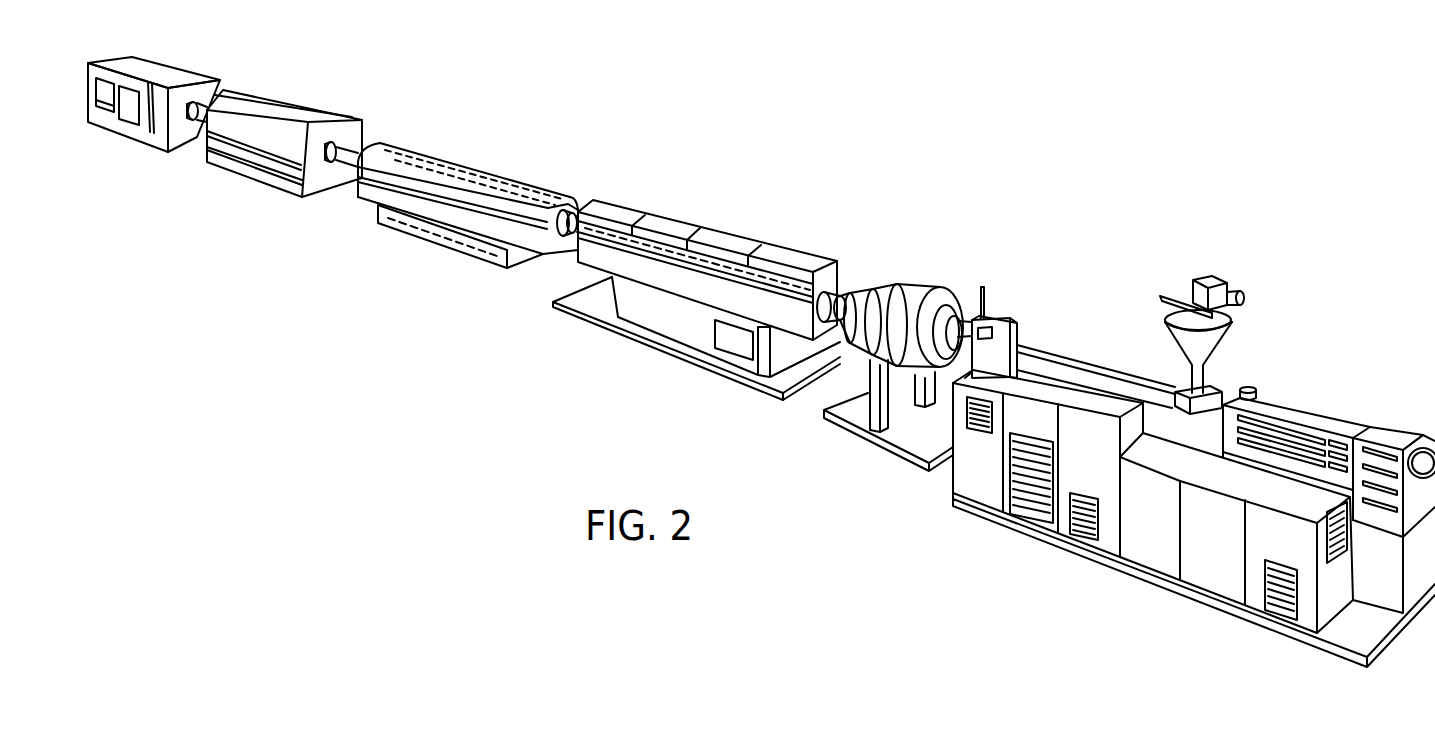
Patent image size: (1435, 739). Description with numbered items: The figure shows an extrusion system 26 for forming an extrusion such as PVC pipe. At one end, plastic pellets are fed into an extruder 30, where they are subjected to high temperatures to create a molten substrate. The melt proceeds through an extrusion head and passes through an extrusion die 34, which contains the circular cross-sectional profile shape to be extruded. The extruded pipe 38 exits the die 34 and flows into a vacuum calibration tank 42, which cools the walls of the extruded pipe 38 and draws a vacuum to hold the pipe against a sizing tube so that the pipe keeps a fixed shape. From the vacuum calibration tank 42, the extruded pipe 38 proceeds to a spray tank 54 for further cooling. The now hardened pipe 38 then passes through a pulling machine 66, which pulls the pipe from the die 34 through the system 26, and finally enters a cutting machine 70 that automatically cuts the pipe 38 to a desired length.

The extrusion system 26 is at (886, 148).
The extruder 30 is at (1330, 413).
The extrusion die 34 is at (912, 291).
The extruded pipe 38 is at (212, 90).
The vacuum calibration tank 42 is at (680, 216).
The spray tank 54 is at (470, 166).
The pulling machine 66 is at (299, 98).
The cutting machine 70 is at (152, 57).